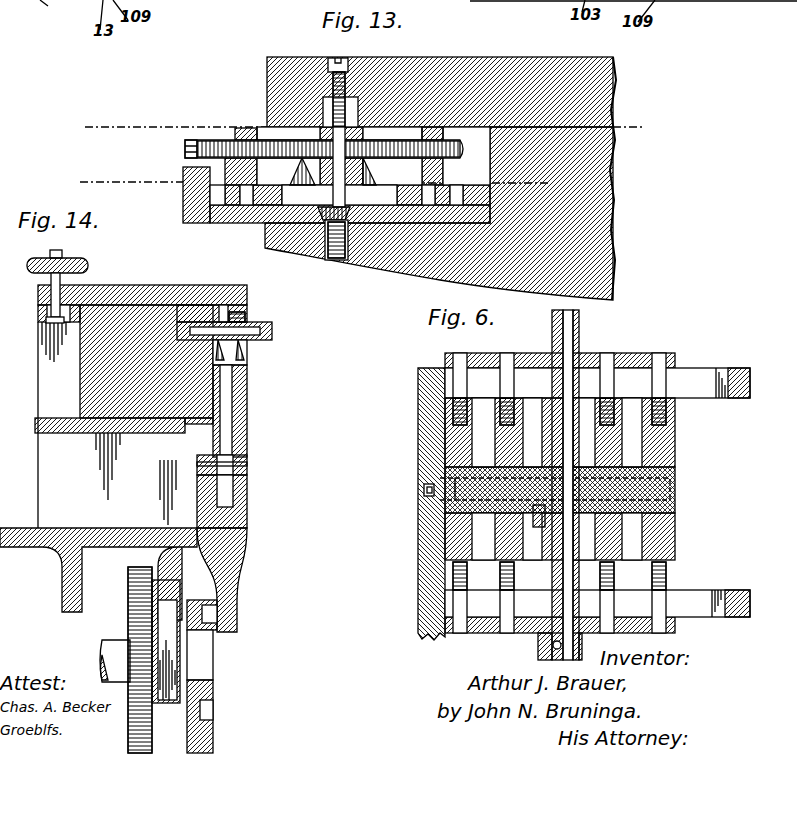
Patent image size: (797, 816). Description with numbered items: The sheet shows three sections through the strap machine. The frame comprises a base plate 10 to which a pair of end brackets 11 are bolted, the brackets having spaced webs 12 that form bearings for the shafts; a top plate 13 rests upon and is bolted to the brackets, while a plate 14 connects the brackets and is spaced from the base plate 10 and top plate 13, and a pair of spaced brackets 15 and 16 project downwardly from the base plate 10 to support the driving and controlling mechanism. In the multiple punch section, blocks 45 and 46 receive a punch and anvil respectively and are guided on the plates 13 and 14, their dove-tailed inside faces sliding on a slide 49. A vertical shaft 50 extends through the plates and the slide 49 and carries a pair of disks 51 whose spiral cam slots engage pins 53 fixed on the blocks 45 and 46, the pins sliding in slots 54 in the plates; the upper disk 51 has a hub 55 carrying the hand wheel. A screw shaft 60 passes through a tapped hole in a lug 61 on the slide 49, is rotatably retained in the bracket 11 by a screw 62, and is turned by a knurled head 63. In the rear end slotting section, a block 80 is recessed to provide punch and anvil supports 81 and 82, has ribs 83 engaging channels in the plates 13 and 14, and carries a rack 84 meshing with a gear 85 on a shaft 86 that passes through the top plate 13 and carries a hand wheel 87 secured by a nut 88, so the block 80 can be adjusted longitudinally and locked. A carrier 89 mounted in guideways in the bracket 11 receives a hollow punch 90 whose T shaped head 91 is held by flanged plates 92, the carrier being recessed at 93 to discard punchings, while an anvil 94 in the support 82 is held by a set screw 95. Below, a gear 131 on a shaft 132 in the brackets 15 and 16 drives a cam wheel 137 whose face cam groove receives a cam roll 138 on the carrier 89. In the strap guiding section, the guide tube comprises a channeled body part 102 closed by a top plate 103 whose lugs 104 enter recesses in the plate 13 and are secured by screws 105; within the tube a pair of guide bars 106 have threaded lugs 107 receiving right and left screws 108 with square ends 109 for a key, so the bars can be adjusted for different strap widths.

In FIG. 14, the base plate 10 is at (68, 538).
In FIG. 13, the end bracket 11 is at (600, 212).
In FIG. 14, the end bracket 11 is at (57, 482).
In FIG. 6, the end bracket 11 is at (425, 533).
In FIG. 13, the spaced web 12 is at (155, 121).
In FIG. 13, the top plate 13 is at (606, 102).
In FIG. 14, the top plate 13 is at (247, 300).
In FIG. 6, the top plate 13 is at (705, 378).
In FIG. 14, the plate 14 is at (151, 428).
In FIG. 6, the plate 14 is at (733, 614).
In FIG. 14, the bracket 15 is at (68, 612).
In FIG. 14, the bracket 16 is at (167, 705).
In FIG. 6, the punch block 45 is at (670, 550).
In FIG. 6, the anvil block 46 is at (664, 442).
In FIG. 6, the slide 49 is at (662, 495).
In FIG. 6, the vertical shaft 50 is at (556, 602).
In FIG. 6, the disk 51 is at (630, 358).
In FIG. 6, the pin 53 is at (440, 368).
In FIG. 6, the slot 54 is at (708, 380).
In FIG. 6, the hub 55 is at (579, 337).
In FIG. 6, the screw shaft 60 is at (423, 492).
In FIG. 6, the lug 61 is at (450, 498).
In FIG. 6, the screw 62 is at (427, 482).
In FIG. 6, the knurled head 63 is at (536, 528).
In FIG. 14, the block 80 is at (108, 315).
In FIG. 14, the punch support 81 is at (248, 398).
In FIG. 14, the anvil support 82 is at (198, 308).
In FIG. 14, the rib 83 is at (134, 300).
In FIG. 14, the rack 84 is at (85, 300).
In FIG. 14, the gear 85 is at (48, 323).
In FIG. 14, the shaft 86 is at (40, 308).
In FIG. 14, the hand wheel 87 is at (62, 268).
In FIG. 14, the nut 88 is at (50, 256).
In FIG. 14, the carrier 89 is at (234, 500).
In FIG. 14, the punch 90 is at (231, 433).
In FIG. 14, the T shaped head 91 is at (229, 466).
In FIG. 14, the flanged plate 92 is at (217, 463).
In FIG. 14, the recess 93 is at (222, 508).
In FIG. 14, the anvil 94 is at (228, 308).
In FIG. 14, the set screw 95 is at (250, 313).
In FIG. 13, the body part 102 is at (412, 195).
In FIG. 14, the body part 102 is at (256, 340).
In FIG. 13, the top plate 103 is at (183, 168).
In FIG. 13, the lug 104 is at (422, 140).
In FIG. 13, the screw 105 is at (362, 98).
In FIG. 13, the guide bar 106 is at (224, 206).
In FIG. 13, the threaded lug 107 is at (244, 128).
In FIG. 13, the right and left screw 108 is at (212, 140).
In FIG. 13, the square end 109 is at (192, 142).
In FIG. 14, the gear 131 is at (130, 585).
In FIG. 14, the shaft 132 is at (204, 660).
In FIG. 14, the cam wheel 137 is at (213, 732).
In FIG. 14, the cam roll 138 is at (214, 612).